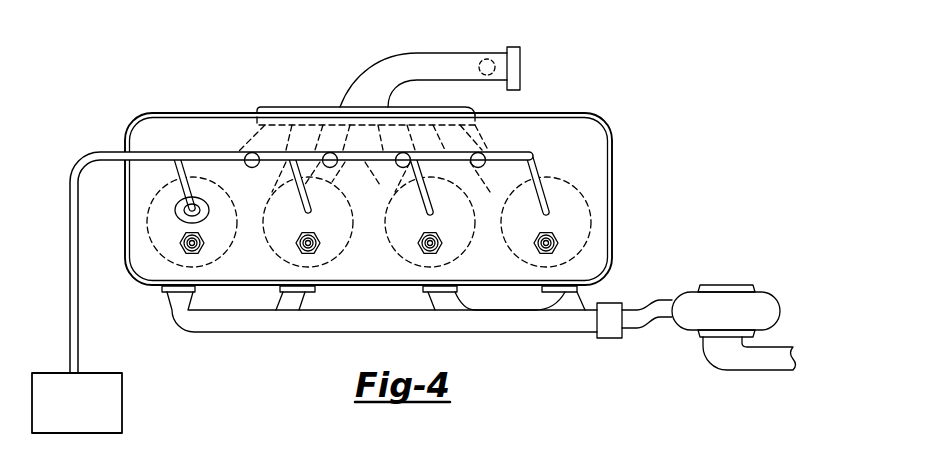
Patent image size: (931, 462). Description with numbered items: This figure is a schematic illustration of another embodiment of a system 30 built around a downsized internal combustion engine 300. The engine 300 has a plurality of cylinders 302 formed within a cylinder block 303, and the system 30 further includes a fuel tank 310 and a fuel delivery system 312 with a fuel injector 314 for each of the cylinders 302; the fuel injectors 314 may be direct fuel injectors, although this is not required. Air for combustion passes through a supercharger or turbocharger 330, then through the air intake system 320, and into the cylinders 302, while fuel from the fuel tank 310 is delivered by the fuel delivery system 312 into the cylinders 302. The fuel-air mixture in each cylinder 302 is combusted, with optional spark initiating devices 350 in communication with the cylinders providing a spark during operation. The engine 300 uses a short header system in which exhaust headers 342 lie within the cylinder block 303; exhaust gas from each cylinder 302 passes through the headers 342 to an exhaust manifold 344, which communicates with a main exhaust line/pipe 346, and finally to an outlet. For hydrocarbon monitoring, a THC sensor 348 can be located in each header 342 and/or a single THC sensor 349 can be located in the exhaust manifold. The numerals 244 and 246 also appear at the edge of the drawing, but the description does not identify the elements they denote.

The system 30 is at (638, 110).
The downsized ICE 300 is at (382, 230).
The cylinders 302 is at (136, 278).
The cylinder block 303 is at (612, 195).
The fuel tank 310 is at (94, 410).
The fuel delivery system 312 is at (104, 141).
The fuel injector 314 is at (306, 207).
The air intake system 320 is at (424, 337).
The supercharger or turbocharger 330 is at (757, 292).
The exhaust headers 342 is at (250, 156).
The exhaust manifold 344 is at (297, 107).
The main exhaust line/pipe 346 is at (426, 53).
The THC sensor 348 is at (238, 157).
The THC sensor 349 is at (484, 59).
The spark initiating devices 350 is at (295, 245).
The mounting member 244 is at (368, 461).
The mounting member 246 is at (368, 461).